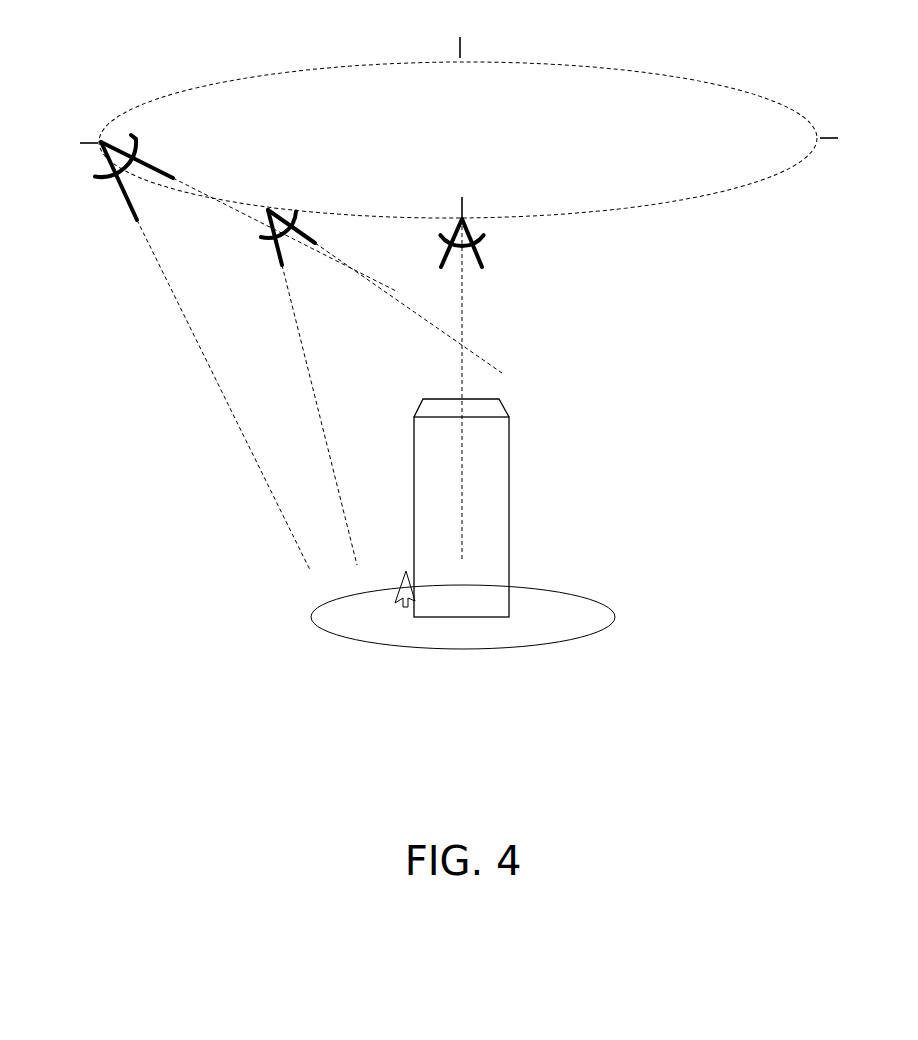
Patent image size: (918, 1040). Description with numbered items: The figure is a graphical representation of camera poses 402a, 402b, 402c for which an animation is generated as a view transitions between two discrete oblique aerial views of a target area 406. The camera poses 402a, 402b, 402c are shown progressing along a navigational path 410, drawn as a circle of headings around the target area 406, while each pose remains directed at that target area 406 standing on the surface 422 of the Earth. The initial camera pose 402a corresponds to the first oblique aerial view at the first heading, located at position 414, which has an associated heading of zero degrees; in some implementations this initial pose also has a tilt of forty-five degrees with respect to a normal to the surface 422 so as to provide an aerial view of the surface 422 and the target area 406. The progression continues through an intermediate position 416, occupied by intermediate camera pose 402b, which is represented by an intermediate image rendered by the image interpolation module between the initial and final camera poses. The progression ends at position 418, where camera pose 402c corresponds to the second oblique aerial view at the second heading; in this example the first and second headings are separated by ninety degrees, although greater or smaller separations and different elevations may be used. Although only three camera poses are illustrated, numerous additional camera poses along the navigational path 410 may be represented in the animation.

The camera pose 402a is at (118, 168).
The camera pose 402b is at (288, 225).
The camera pose 402c is at (455, 230).
The target area 406 is at (508, 483).
The navigational path 410 is at (653, 205).
The position 414 is at (103, 137).
The intermediate position 416 is at (267, 208).
The position 418 is at (462, 219).
The surface 422 is at (560, 643).